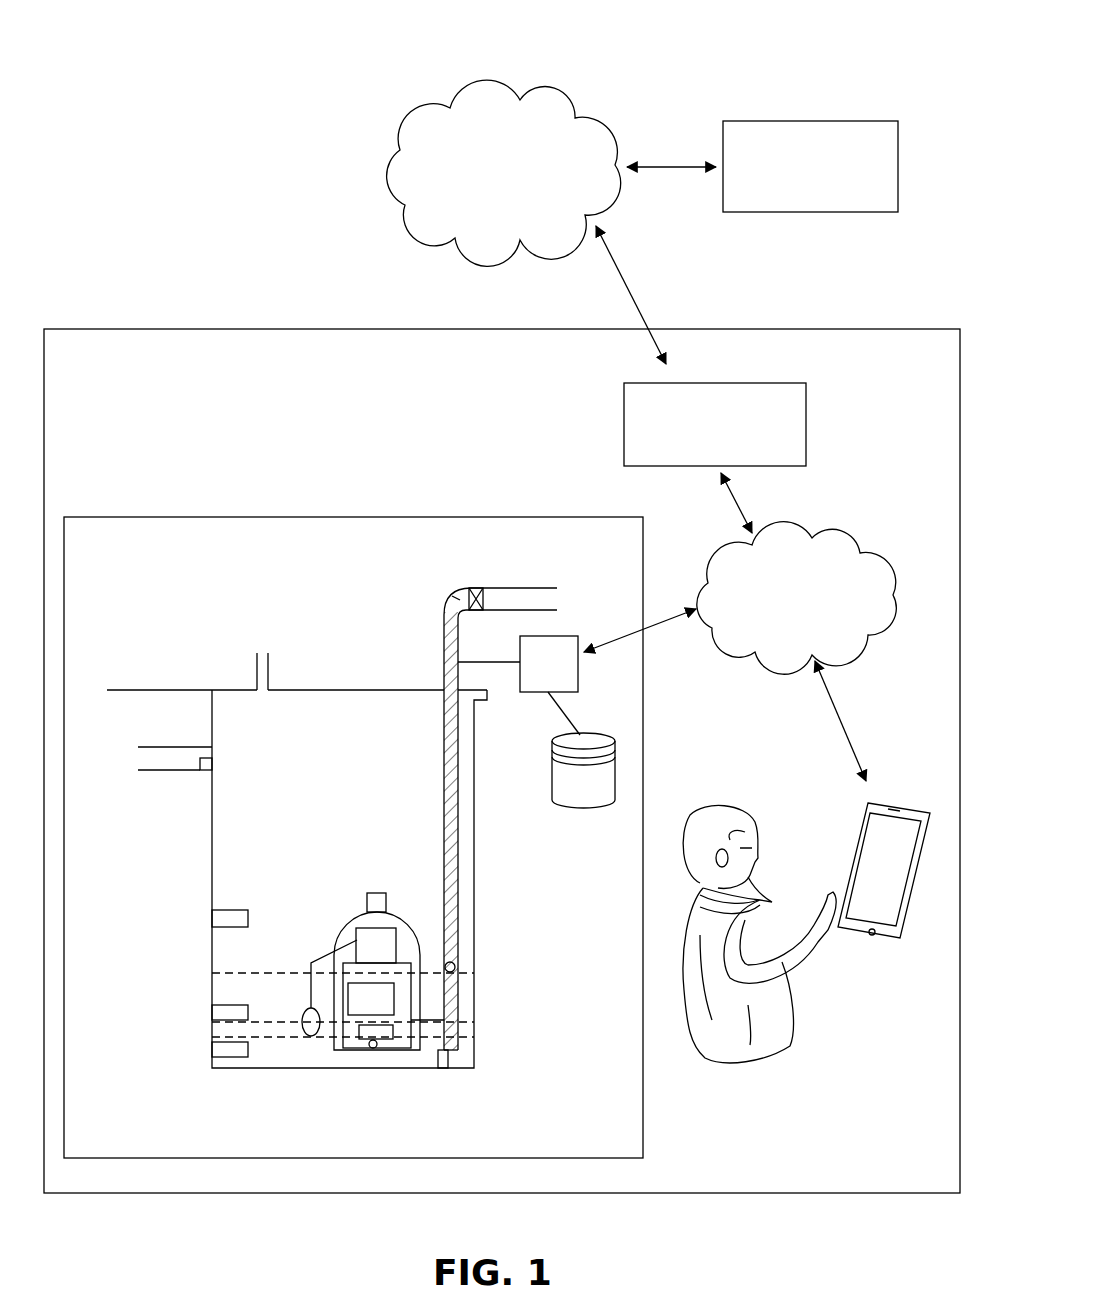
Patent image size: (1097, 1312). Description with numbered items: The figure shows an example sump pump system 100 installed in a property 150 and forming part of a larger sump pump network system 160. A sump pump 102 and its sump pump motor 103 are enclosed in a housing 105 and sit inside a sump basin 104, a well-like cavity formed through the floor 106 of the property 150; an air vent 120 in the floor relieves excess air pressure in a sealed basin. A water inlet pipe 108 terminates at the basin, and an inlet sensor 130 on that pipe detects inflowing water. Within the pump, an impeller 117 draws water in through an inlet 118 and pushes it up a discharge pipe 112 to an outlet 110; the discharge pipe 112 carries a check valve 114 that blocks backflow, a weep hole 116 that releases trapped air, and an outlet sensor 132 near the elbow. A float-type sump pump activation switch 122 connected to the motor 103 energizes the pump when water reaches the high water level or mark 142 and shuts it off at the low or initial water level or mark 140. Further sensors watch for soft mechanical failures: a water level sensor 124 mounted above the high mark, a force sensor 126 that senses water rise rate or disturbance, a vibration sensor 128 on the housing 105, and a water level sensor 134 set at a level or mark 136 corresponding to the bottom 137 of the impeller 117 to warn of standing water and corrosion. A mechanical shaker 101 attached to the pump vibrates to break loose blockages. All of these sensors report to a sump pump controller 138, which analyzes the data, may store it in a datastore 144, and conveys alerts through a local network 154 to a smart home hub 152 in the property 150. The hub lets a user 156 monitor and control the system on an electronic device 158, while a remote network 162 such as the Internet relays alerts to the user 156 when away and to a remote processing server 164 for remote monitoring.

The sump pump system 100 is at (312, 517).
The mechanical shaker 101 is at (371, 999).
The sump pump 102 is at (400, 1008).
The sump pump motor 103 is at (357, 935).
The sump basin 104 is at (330, 790).
The housing 105 is at (417, 934).
The floor 106 is at (135, 690).
The water inlet pipe 108 is at (160, 752).
The outlet 110 is at (545, 600).
The discharge pipe 112 is at (452, 773).
The check valve 114 is at (485, 590).
The weep hole 116 is at (456, 967).
The impeller 117 is at (392, 1037).
The inlet 118 is at (375, 1050).
The air vent 120 is at (255, 672).
The sump pump activation switch 122 is at (310, 1036).
The water level sensor 124 is at (222, 918).
The force sensor 126 is at (222, 1013).
The vibration sensor 128 is at (380, 902).
The inlet sensor 130 is at (200, 768).
The outlet sensor 132 is at (458, 596).
The water level sensor 134 is at (222, 1052).
The level or mark 136 is at (235, 1040).
The bottom of the impeller 137 is at (358, 1042).
The sump pump controller 138 is at (565, 676).
The low or initial water level or mark 140 is at (270, 1020).
The high water level or mark 142 is at (232, 973).
The database 144 is at (581, 750).
The property 150 is at (838, 329).
The smart home hub 152 is at (806, 418).
The local network 154 is at (835, 540).
The user 156 is at (765, 1058).
The electronic device 158 is at (900, 806).
The sump pump network system 160 is at (816, 30).
The remote network 162 is at (524, 92).
The remote processing server 164 is at (898, 151).